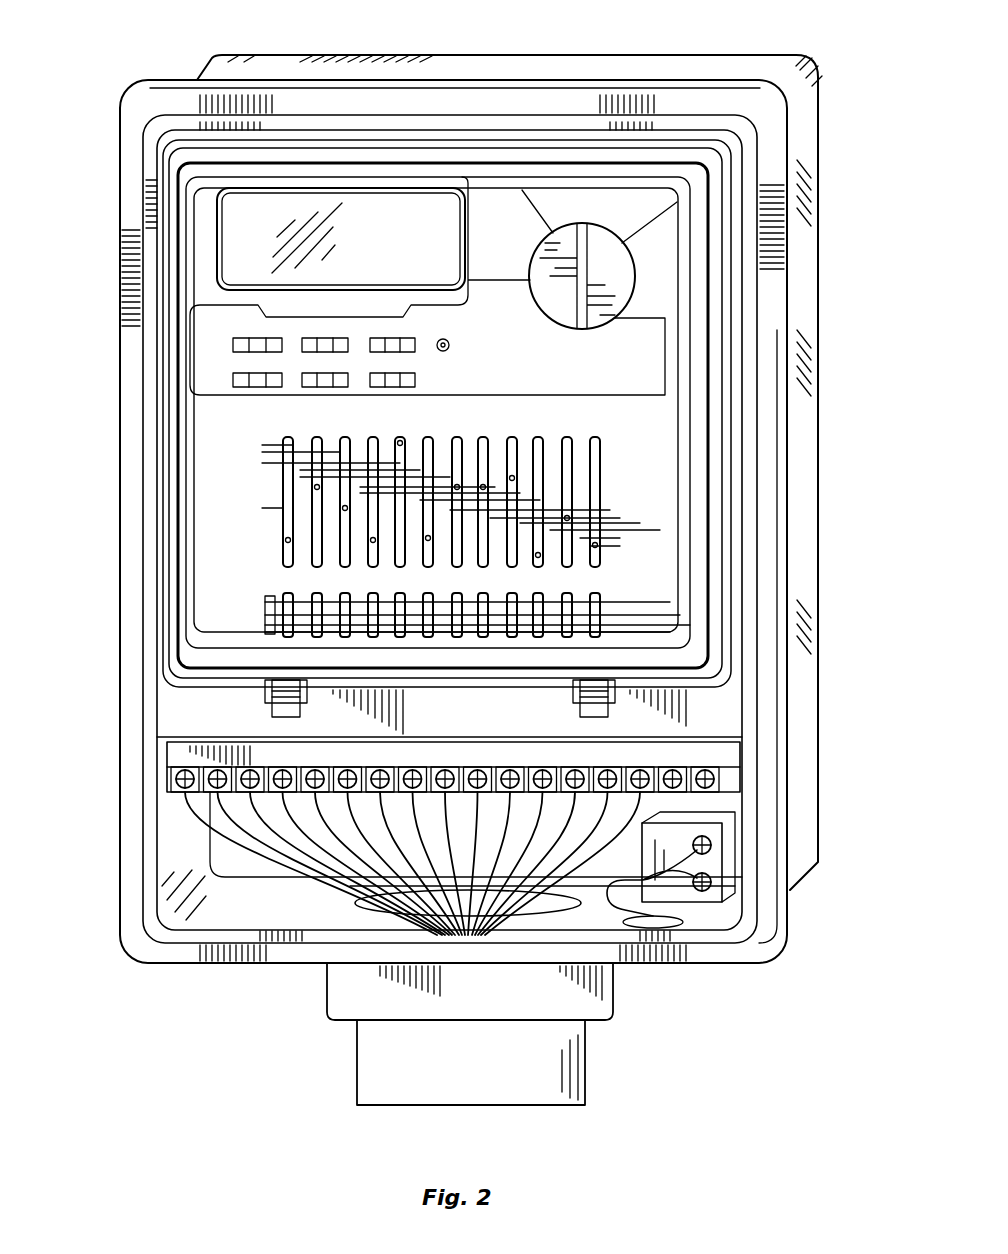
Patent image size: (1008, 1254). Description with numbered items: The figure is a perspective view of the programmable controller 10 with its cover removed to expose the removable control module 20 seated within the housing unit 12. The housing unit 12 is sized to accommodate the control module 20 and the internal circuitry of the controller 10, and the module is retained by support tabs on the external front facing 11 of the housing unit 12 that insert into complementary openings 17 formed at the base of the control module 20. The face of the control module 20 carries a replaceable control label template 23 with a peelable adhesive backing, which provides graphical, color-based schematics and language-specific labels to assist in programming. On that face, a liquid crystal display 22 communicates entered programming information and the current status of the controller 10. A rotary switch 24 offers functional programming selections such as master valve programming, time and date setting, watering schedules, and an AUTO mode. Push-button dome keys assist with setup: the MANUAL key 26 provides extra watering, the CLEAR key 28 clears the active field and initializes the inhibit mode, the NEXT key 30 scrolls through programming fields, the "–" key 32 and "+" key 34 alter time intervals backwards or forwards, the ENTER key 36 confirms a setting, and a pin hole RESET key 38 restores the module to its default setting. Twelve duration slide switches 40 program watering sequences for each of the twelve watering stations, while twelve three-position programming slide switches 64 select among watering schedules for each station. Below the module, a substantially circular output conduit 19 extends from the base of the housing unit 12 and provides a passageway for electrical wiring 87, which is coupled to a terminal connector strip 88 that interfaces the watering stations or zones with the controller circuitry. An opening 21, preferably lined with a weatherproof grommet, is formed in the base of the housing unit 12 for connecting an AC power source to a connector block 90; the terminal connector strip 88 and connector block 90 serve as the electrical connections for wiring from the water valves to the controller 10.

The programmable controller 10 is at (98, 937).
The external front facing 11 is at (750, 415).
The housing unit 12 is at (805, 530).
The openings 17 is at (265, 690).
The output conduit 19 is at (393, 1055).
The removable control module 20 is at (725, 622).
The opening 21 is at (670, 921).
The liquid crystal display 22 is at (375, 212).
The control label template 23 is at (210, 540).
The rotary switch 24 is at (610, 230).
The MANUAL key 26 is at (233, 345).
The CLEAR key 28 is at (300, 336).
The NEXT key 30 is at (410, 340).
The "–" key 32 is at (233, 380).
The "+" key 34 is at (310, 388).
The ENTER key 36 is at (416, 382).
The RESET key 38 is at (450, 345).
The duration slide switches 40 is at (283, 510).
The programming slide switches 64 is at (265, 610).
The electrical wiring 87 is at (722, 812).
The terminal connector strip 88 is at (670, 768).
The connector block 90 is at (733, 872).